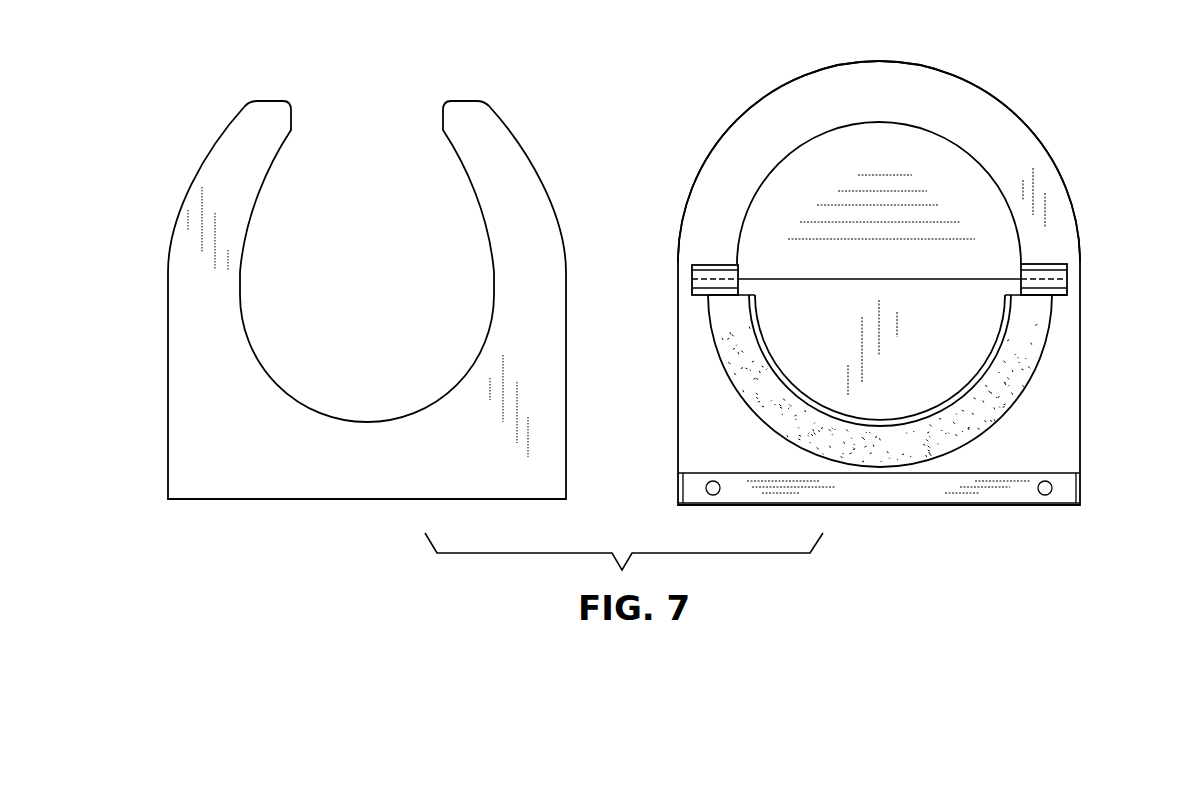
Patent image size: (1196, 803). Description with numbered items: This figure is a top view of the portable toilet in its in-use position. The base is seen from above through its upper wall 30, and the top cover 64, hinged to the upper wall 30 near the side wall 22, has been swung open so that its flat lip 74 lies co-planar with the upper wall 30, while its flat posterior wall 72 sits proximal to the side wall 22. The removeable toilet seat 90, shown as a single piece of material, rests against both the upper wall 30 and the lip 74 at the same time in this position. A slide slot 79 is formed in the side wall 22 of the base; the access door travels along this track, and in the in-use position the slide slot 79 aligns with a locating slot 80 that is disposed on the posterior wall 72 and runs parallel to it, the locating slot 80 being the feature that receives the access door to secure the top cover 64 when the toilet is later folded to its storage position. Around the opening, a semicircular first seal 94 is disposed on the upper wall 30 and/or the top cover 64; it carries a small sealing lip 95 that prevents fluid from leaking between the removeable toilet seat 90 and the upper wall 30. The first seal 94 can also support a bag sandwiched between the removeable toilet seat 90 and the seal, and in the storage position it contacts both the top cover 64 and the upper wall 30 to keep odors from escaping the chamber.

The removeable toilet seat 90 is at (187, 412).
The upper wall 30 is at (695, 413).
The top cover 64 is at (742, 113).
The lip 74 is at (980, 115).
The posterior wall 72 is at (680, 279).
The locating slot 80 is at (1067, 264).
The slide slot 79 is at (1067, 292).
The side wall 22 is at (680, 280).
The first seal 94 is at (1018, 375).
The sealing lip 95 is at (870, 424).